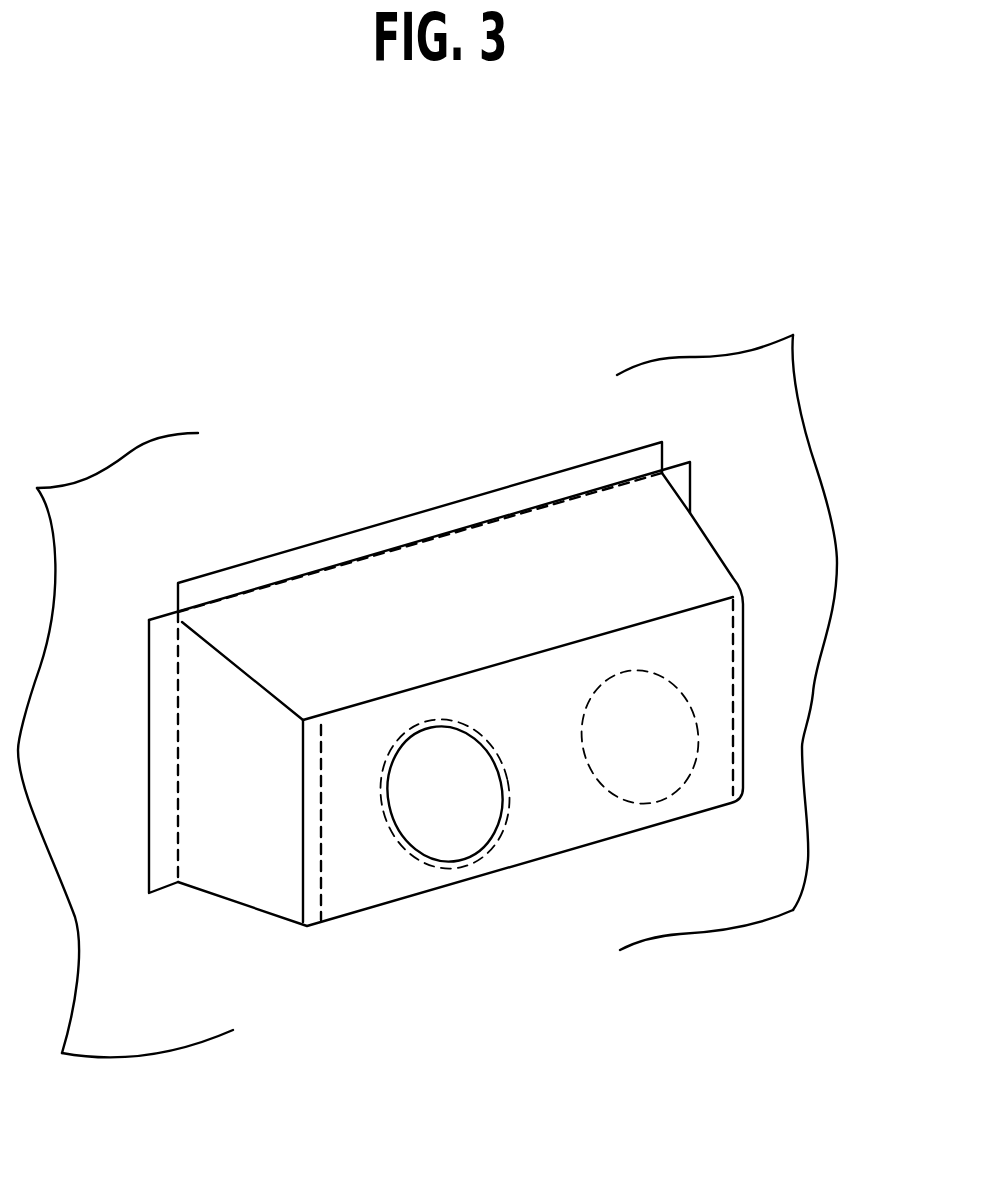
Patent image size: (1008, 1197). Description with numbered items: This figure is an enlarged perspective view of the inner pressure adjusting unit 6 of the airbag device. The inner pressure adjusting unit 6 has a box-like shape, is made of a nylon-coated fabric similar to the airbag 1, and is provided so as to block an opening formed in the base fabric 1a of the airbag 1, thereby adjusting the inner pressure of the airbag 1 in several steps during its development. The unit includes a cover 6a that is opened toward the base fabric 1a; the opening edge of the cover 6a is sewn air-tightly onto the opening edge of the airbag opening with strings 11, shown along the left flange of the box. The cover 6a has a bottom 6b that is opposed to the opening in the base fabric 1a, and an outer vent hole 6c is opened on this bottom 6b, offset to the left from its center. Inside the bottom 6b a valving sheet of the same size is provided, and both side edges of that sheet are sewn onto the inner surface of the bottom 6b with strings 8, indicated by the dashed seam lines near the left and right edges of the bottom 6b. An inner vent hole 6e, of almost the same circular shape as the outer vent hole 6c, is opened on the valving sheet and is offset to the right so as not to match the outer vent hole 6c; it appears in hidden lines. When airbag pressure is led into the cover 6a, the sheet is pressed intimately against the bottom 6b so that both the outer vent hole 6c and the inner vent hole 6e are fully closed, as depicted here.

The airbag 1 is at (695, 347).
The base fabric 1a is at (795, 485).
The inner pressure adjusting unit 6 is at (507, 733).
The cover 6a is at (290, 890).
The bottom 6b is at (550, 833).
The outer vent hole 6c is at (445, 860).
The inner vent hole 6e is at (673, 780).
The strings 8 is at (321, 825).
The strings 11 is at (180, 747).